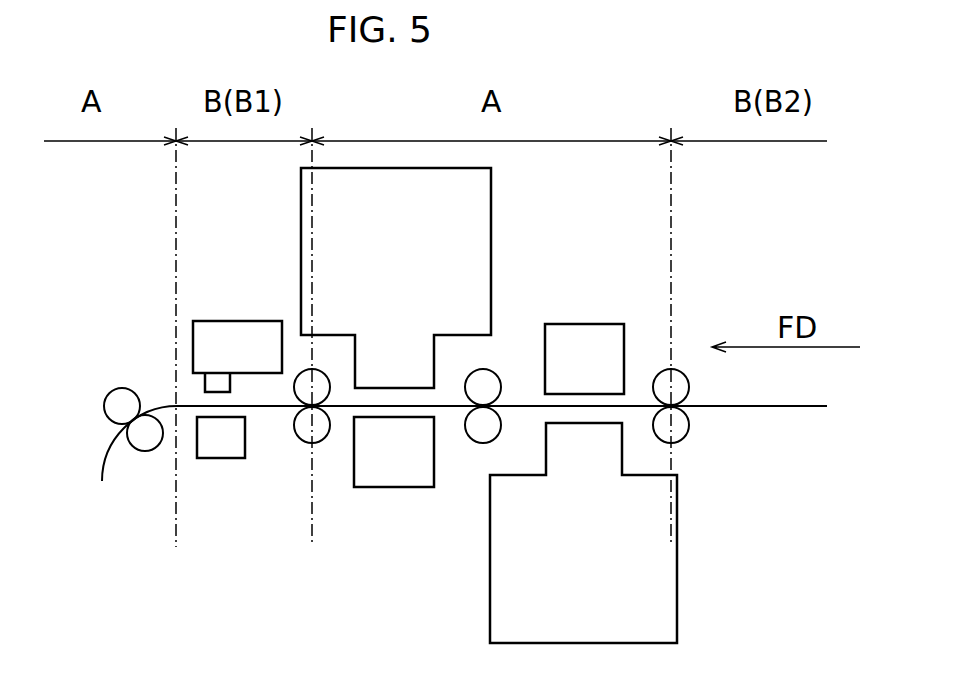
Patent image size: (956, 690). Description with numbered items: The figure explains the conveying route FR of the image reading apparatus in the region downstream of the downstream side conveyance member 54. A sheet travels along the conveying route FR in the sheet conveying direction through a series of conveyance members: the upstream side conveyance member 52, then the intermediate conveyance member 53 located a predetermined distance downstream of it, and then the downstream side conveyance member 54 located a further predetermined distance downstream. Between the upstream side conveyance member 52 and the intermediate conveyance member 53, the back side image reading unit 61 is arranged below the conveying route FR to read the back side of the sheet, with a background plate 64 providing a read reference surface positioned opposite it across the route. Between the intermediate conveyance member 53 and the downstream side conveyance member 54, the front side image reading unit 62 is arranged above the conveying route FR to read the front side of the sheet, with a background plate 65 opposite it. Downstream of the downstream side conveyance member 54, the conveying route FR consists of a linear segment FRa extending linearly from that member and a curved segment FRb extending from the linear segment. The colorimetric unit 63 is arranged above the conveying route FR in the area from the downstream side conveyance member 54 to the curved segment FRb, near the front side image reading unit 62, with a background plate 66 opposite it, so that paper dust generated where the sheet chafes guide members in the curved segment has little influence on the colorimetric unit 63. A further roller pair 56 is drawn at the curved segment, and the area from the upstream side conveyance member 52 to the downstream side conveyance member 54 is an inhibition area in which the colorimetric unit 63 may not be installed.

The upstream side conveyance member 52 is at (689, 430).
The intermediate conveyance member 53 is at (497, 372).
The downstream side conveyance member 54 is at (330, 437).
The discharge roller pair 56 is at (134, 451).
The back side image reading unit 61 is at (677, 573).
The front side image reading unit 62 is at (491, 195).
The colorimetric unit 63 is at (218, 321).
The background plate 64 is at (608, 324).
The background plate 65 is at (398, 487).
The background plate 66 is at (212, 458).
The conveying route FR is at (255, 565).